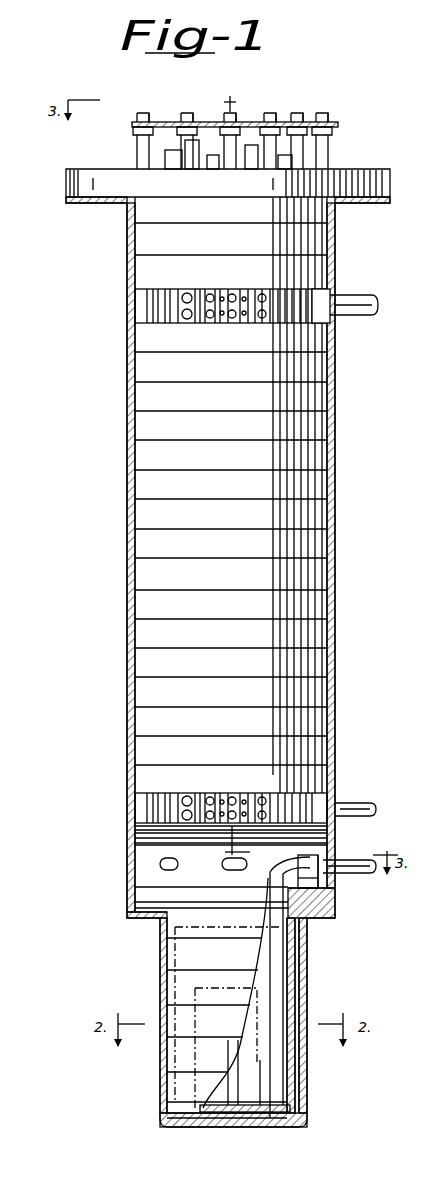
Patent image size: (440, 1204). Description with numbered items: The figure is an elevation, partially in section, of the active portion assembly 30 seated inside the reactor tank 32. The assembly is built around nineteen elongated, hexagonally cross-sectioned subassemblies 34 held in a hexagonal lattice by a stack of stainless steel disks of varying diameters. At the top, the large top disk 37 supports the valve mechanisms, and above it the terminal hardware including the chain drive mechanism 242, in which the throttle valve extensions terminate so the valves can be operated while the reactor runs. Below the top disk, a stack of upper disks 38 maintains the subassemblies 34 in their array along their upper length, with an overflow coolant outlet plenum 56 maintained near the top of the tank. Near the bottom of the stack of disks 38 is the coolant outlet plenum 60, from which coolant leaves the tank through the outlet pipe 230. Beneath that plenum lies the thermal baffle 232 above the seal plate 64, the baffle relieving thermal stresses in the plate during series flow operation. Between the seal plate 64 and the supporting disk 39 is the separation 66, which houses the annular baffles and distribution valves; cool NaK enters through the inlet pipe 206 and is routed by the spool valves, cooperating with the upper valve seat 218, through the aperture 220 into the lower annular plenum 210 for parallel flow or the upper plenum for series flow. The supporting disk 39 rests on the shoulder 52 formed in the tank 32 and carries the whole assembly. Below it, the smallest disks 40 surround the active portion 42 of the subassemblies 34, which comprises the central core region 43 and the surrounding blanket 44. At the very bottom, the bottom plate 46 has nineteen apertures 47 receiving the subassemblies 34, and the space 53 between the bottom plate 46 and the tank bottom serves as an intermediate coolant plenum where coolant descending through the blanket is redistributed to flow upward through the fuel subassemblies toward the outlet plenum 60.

The active portion assembly 30 is at (235, 120).
The chain drive mechanism 242 is at (160, 124).
The top disk 37 is at (108, 180).
The reactor tank 32 is at (128, 420).
The upper disks 38 is at (147, 570).
The overflow coolant outlet plenum 56 is at (138, 299).
The coolant outlet plenum 60 is at (138, 803).
The outlet pipe 230 is at (348, 808).
The thermal baffle 232 is at (138, 826).
The seal plate 64 is at (138, 841).
The separation 66 is at (186, 867).
The aperture 220 is at (224, 869).
The upper valve seat 218 is at (310, 863).
The inlet pipe 206 is at (352, 860).
The lower annular plenum 210 is at (316, 884).
The supporting disk 39 is at (330, 903).
The shoulder 52 is at (138, 905).
The smallest disks 40 is at (300, 976).
The blanket 44 is at (240, 960).
The core region 43 is at (236, 1026).
The active portion 42 is at (190, 985).
The subassemblies 34 is at (235, 1090).
The bottom plate 46 is at (220, 1115).
The space 53 is at (190, 1120).
The apertures 47 is at (270, 1118).